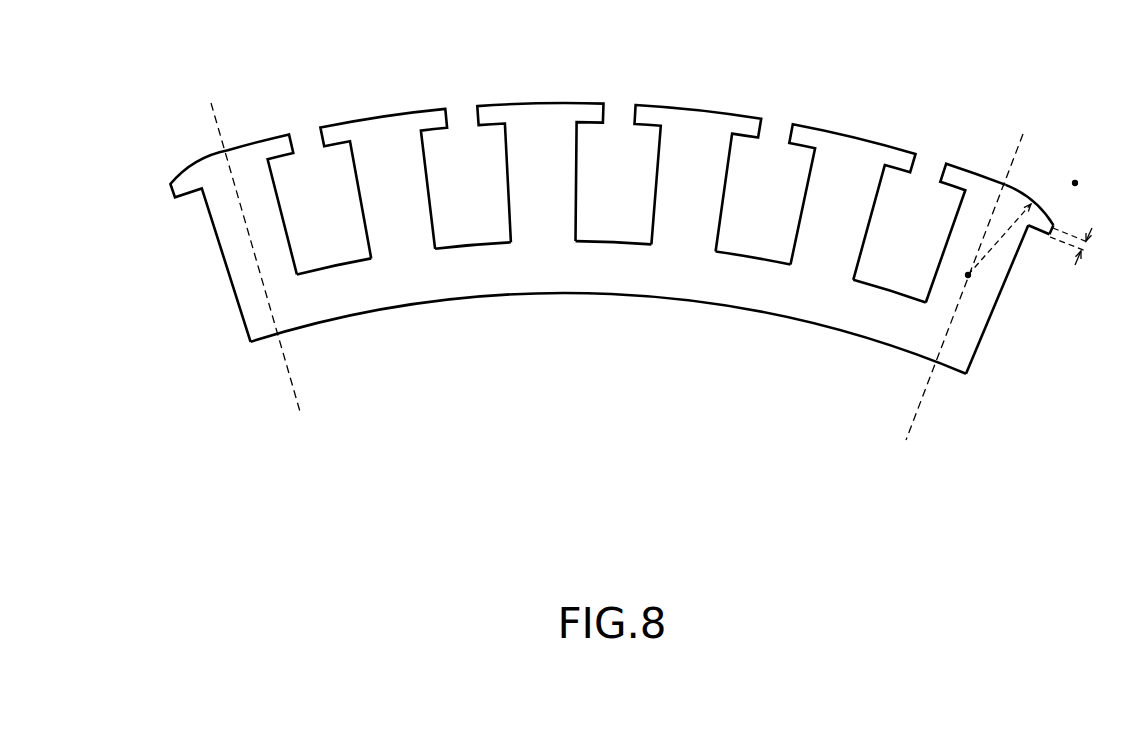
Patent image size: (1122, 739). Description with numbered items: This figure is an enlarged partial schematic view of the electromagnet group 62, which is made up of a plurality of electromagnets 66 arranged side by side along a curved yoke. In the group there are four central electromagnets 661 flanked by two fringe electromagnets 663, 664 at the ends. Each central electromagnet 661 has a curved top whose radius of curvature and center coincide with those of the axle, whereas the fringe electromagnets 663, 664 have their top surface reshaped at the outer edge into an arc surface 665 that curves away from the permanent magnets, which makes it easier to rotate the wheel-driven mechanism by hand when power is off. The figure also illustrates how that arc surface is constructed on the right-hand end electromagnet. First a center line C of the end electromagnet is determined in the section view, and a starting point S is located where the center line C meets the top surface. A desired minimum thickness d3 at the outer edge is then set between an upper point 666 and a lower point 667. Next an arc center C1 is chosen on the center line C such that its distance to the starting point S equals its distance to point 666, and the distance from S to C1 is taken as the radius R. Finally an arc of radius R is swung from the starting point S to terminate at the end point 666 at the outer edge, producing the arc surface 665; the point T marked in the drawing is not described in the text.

The electromagnet 66 is at (168, 55).
The central electromagnet 661 is at (383, 112).
The fringe electromagnet 663 is at (243, 142).
The fringe electromagnet 664 is at (1023, 239).
The arc surface 665 is at (945, 162).
The end point 666 is at (1056, 224).
The point 667 is at (1051, 242).
The electromagnet group 62 is at (603, 352).
The center line C is at (959, 296).
The arc center C1 is at (955, 275).
The radius R is at (999, 239).
The starting point S is at (1004, 184).
The reference point T is at (1084, 182).
The minimum thickness d3 is at (1085, 246).